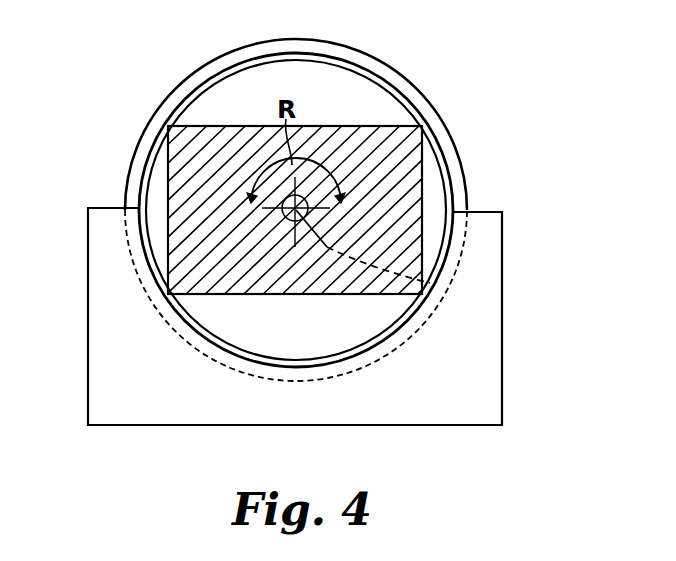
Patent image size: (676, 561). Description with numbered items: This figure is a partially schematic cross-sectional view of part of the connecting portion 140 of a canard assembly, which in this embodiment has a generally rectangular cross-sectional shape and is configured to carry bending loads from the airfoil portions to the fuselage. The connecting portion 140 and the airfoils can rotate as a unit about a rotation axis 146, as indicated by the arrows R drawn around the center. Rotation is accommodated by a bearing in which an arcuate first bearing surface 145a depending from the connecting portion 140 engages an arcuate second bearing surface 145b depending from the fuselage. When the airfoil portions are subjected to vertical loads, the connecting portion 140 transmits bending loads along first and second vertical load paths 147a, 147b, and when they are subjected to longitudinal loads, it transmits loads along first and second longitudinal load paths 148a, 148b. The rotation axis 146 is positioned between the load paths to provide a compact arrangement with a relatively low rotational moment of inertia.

The connecting portion 140 is at (407, 193).
The first bearing surface 145a is at (221, 50).
The second bearing surface 145b is at (142, 283).
The rotation axis 146 is at (433, 283).
The first vertical load path 147a is at (347, 126).
The second vertical load path 147b is at (327, 295).
The first longitudinal load path 148a is at (432, 166).
The second longitudinal load path 148b is at (168, 173).